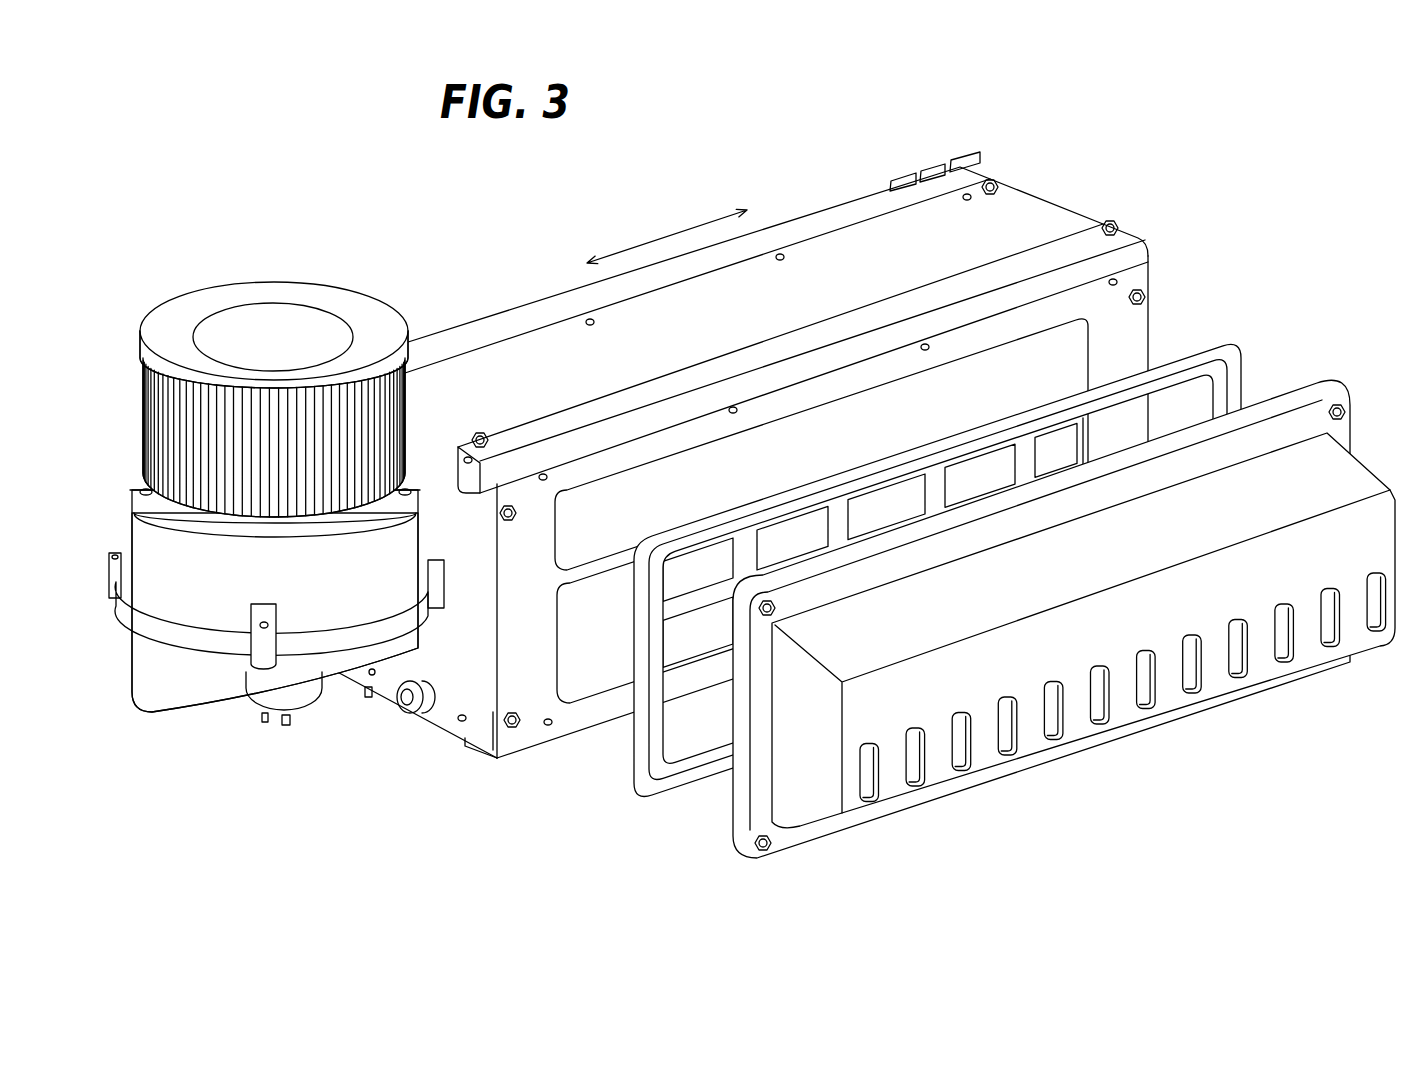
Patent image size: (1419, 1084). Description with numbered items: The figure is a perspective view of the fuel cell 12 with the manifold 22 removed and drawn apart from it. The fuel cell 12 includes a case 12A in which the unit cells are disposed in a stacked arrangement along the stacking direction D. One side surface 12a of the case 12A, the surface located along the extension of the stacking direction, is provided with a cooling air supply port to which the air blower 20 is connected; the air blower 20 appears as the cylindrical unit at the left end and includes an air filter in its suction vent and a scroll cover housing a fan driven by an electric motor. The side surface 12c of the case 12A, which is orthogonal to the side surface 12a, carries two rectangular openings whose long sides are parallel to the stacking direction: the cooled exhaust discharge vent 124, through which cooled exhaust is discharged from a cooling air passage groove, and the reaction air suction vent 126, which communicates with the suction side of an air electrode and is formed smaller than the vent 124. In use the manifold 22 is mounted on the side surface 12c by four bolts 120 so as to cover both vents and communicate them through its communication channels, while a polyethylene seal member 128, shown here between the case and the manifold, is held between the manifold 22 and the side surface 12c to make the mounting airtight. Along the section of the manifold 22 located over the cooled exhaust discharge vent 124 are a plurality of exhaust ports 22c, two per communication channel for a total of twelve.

The fuel cell 12 is at (739, 474).
The case 12A is at (1016, 211).
The side surface 12a is at (434, 739).
The side surface 12c is at (528, 758).
The reaction air suction vent 126 is at (589, 499).
The cooled exhaust discharge vent 124 is at (591, 681).
The seal member 128 is at (647, 750).
The bolts 120 is at (1333, 383).
The manifold 22 is at (1042, 603).
The exhaust ports 22c is at (912, 780).
The air blower 20 is at (161, 714).